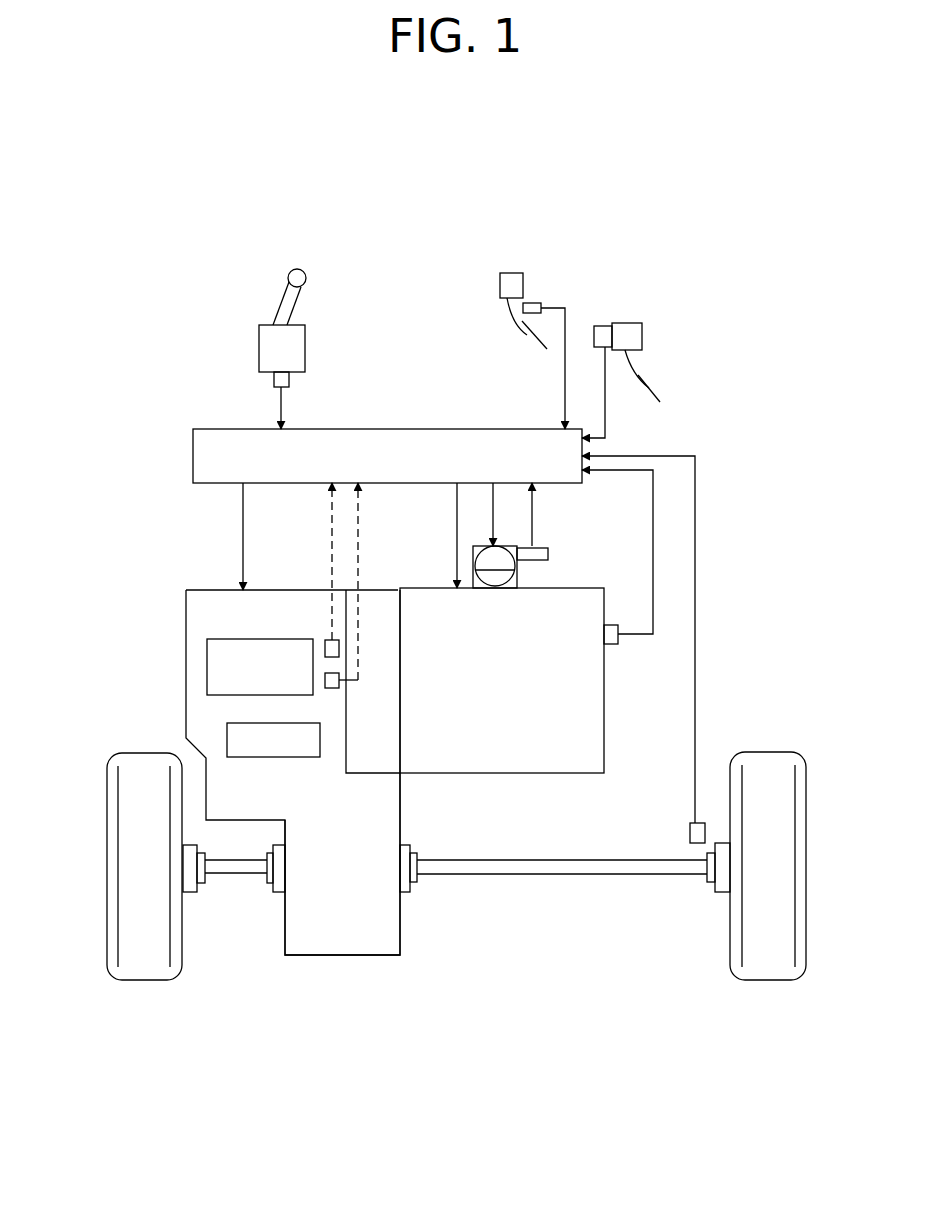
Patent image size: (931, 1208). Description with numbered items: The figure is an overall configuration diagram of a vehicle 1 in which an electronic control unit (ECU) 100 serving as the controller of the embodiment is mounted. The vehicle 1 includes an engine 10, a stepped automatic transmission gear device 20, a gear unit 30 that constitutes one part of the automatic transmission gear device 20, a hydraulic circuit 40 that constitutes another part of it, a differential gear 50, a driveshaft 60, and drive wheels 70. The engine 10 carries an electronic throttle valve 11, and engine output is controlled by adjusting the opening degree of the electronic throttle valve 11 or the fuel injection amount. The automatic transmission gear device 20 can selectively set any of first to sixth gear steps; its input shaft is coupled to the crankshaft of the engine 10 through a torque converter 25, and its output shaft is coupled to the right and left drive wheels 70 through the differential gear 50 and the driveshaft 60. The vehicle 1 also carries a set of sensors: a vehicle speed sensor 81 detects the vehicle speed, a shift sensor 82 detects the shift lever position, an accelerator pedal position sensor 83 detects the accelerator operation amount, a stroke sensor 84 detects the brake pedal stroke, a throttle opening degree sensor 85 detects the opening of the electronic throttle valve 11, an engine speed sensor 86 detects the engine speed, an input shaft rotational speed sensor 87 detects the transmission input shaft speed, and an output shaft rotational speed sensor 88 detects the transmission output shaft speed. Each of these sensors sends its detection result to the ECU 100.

The vehicle 1 is at (426, 163).
The engine 10 is at (552, 773).
The electronic throttle valve 11 is at (517, 582).
The stepped automatic transmission gear device 20 is at (198, 588).
The torque converter 25 is at (372, 773).
The gear unit 30 is at (207, 667).
The hydraulic circuit 40 is at (263, 757).
The differential gear 50 is at (340, 955).
The driveshaft 60 is at (233, 880).
The drive wheels 70 is at (140, 983).
The vehicle speed sensor 81 is at (690, 828).
The shift sensor 82 is at (272, 382).
The accelerator pedal position sensor 83 is at (535, 302).
The stroke sensor 84 is at (605, 324).
The throttle opening degree sensor 85 is at (548, 556).
The engine speed sensor 86 is at (610, 645).
The input shaft rotational speed sensor 87 is at (327, 640).
The output shaft rotational speed sensor 88 is at (327, 689).
The electronic control unit (ECU) 100 is at (480, 429).